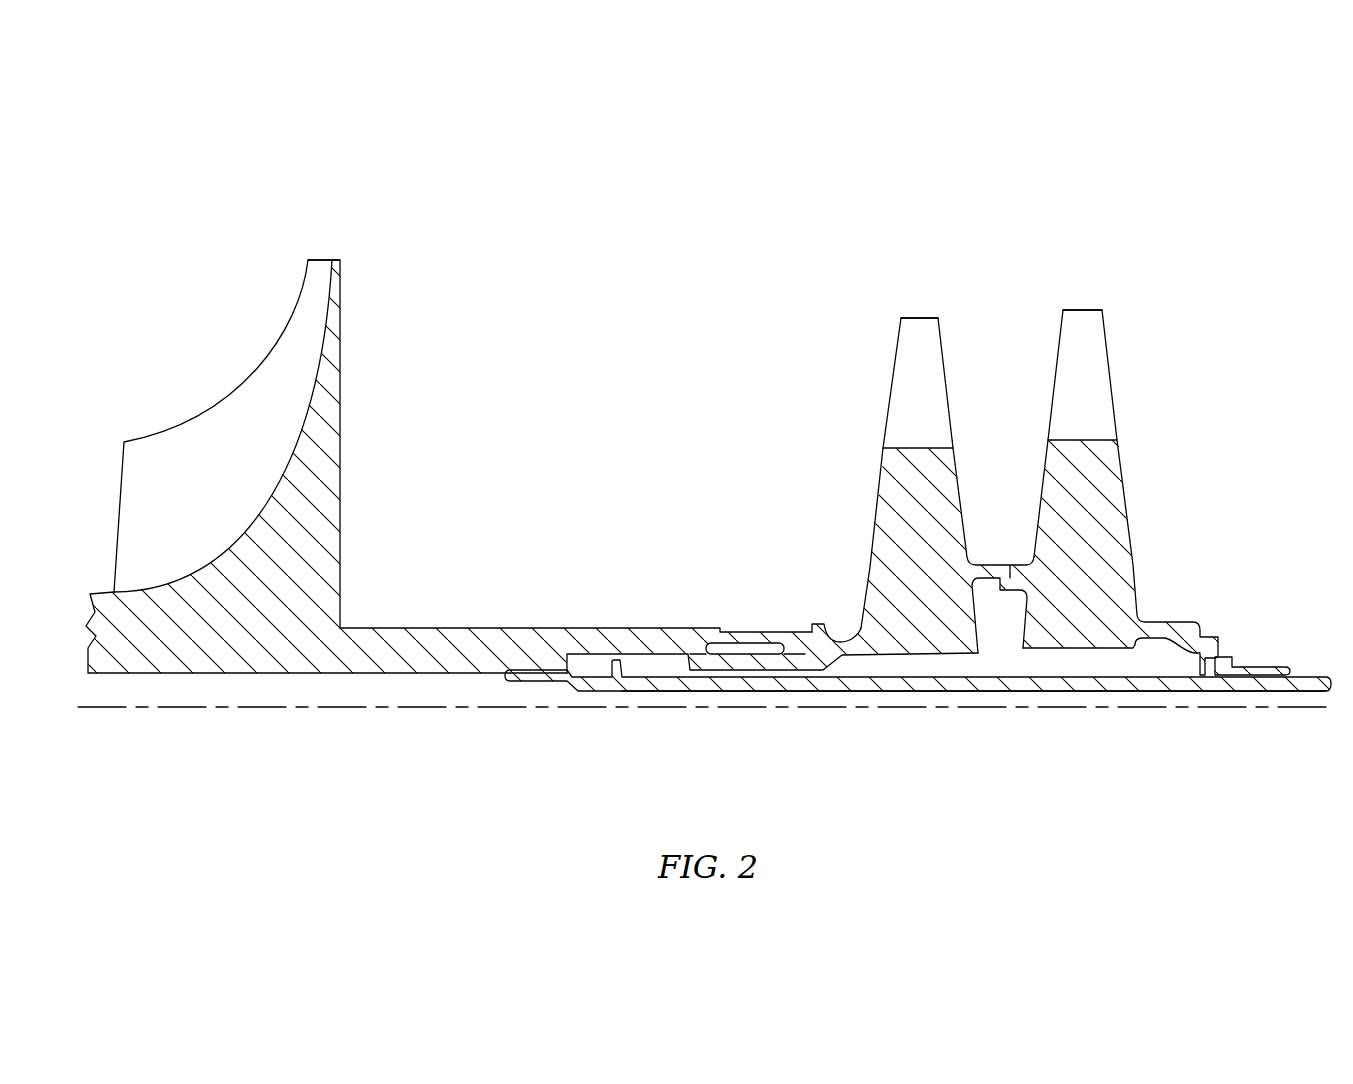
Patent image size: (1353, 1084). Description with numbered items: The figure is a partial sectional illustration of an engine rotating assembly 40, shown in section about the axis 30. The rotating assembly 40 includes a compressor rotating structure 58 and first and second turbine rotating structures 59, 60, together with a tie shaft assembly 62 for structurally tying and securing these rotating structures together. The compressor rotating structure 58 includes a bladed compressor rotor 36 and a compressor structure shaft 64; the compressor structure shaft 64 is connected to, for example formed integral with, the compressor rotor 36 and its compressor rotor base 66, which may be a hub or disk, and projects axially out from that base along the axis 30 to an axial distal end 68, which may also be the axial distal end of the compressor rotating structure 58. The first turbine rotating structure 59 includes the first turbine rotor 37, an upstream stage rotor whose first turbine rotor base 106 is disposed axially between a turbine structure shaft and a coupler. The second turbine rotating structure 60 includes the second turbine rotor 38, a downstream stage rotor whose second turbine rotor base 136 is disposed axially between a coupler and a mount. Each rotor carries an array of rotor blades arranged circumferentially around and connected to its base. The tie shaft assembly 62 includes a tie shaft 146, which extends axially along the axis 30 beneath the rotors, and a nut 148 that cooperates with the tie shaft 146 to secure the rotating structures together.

The axis 30 is at (86, 713).
The compressor rotor 36 is at (352, 380).
The first turbine rotor 37 is at (876, 398).
The second turbine rotor 38 is at (1123, 361).
The rotating assembly 40 is at (1198, 185).
The compressor rotating structure 58 is at (322, 232).
The first turbine rotating structure 59 is at (919, 290).
The second turbine rotating structure 60 is at (1088, 290).
The tie shaft assembly 62 is at (857, 700).
The compressor structure shaft 64 is at (445, 627).
The compressor rotor base 66 is at (256, 598).
The axial distal end 68 is at (832, 624).
The first turbine rotor base 106 is at (898, 557).
The second turbine rotor base 136 is at (1060, 557).
The tie shaft 146 is at (1032, 693).
The nut 148 is at (1252, 665).